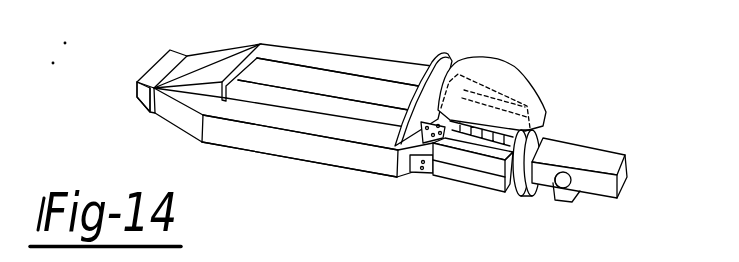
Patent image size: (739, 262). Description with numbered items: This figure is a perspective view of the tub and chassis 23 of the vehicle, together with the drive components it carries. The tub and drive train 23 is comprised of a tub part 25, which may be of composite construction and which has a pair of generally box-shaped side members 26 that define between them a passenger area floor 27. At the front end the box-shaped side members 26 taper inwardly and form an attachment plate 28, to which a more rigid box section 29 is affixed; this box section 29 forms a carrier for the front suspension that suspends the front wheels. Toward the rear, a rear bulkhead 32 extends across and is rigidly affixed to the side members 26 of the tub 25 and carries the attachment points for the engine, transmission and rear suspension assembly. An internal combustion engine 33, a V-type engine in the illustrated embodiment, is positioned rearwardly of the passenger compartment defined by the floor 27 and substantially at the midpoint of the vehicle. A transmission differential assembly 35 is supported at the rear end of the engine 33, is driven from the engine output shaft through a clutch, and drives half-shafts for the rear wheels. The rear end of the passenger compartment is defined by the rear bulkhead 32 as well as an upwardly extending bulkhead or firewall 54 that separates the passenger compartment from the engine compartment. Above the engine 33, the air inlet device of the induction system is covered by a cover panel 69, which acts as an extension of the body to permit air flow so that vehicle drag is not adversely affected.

The tub and chassis 23 is at (300, 163).
The tub part 25 is at (262, 101).
The side members 26 is at (315, 60).
The passenger area floor 27 is at (346, 106).
The attachment plate 28 is at (152, 113).
The box section 29 is at (143, 100).
The rear bulkhead 32 is at (397, 178).
The internal combustion engine 33 is at (485, 182).
The transmission differential assembly 35 is at (580, 150).
The bulkhead or firewall 54 is at (447, 54).
The cover panel 69 is at (500, 80).